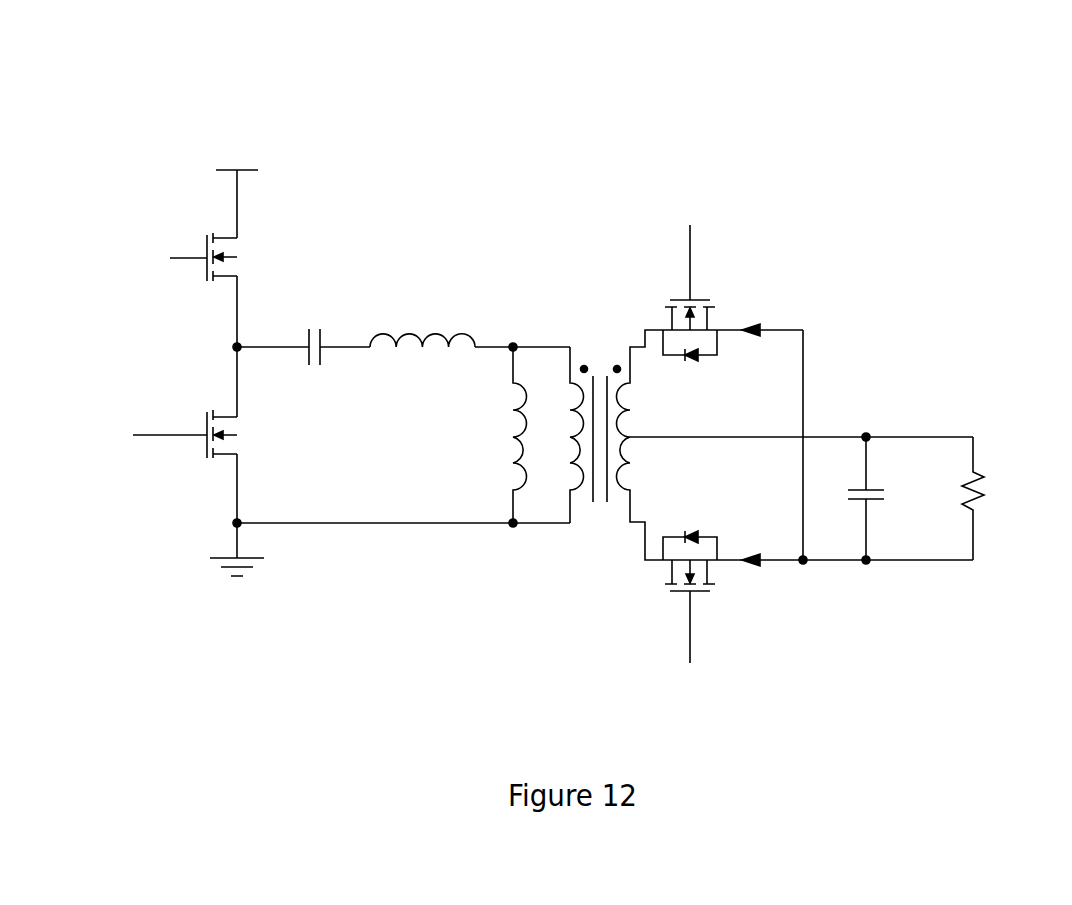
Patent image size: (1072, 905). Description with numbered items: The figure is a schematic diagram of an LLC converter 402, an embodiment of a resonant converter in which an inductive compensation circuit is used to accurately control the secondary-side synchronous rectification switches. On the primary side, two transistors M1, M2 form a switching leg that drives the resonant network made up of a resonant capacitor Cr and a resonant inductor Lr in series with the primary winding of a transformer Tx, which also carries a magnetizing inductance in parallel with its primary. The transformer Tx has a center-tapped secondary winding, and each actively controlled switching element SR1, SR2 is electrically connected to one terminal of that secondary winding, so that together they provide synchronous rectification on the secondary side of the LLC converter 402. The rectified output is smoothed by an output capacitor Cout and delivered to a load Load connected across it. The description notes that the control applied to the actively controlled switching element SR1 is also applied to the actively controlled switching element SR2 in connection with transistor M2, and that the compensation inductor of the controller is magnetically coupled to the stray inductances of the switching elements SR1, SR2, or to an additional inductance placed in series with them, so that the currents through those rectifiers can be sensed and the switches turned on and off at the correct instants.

The LLC converter 402 is at (153, 100).
The transistor M1 is at (224, 257).
The transistor M2 is at (205, 434).
The resonant capacitor Cr is at (313, 332).
The resonant inductor Lr is at (422, 327).
The transformer Tx is at (620, 434).
The actively controlled switching element SR1 is at (666, 597).
The actively controlled switching element SR2 is at (672, 293).
The output capacitor Cout is at (896, 498).
The load Load is at (1003, 498).